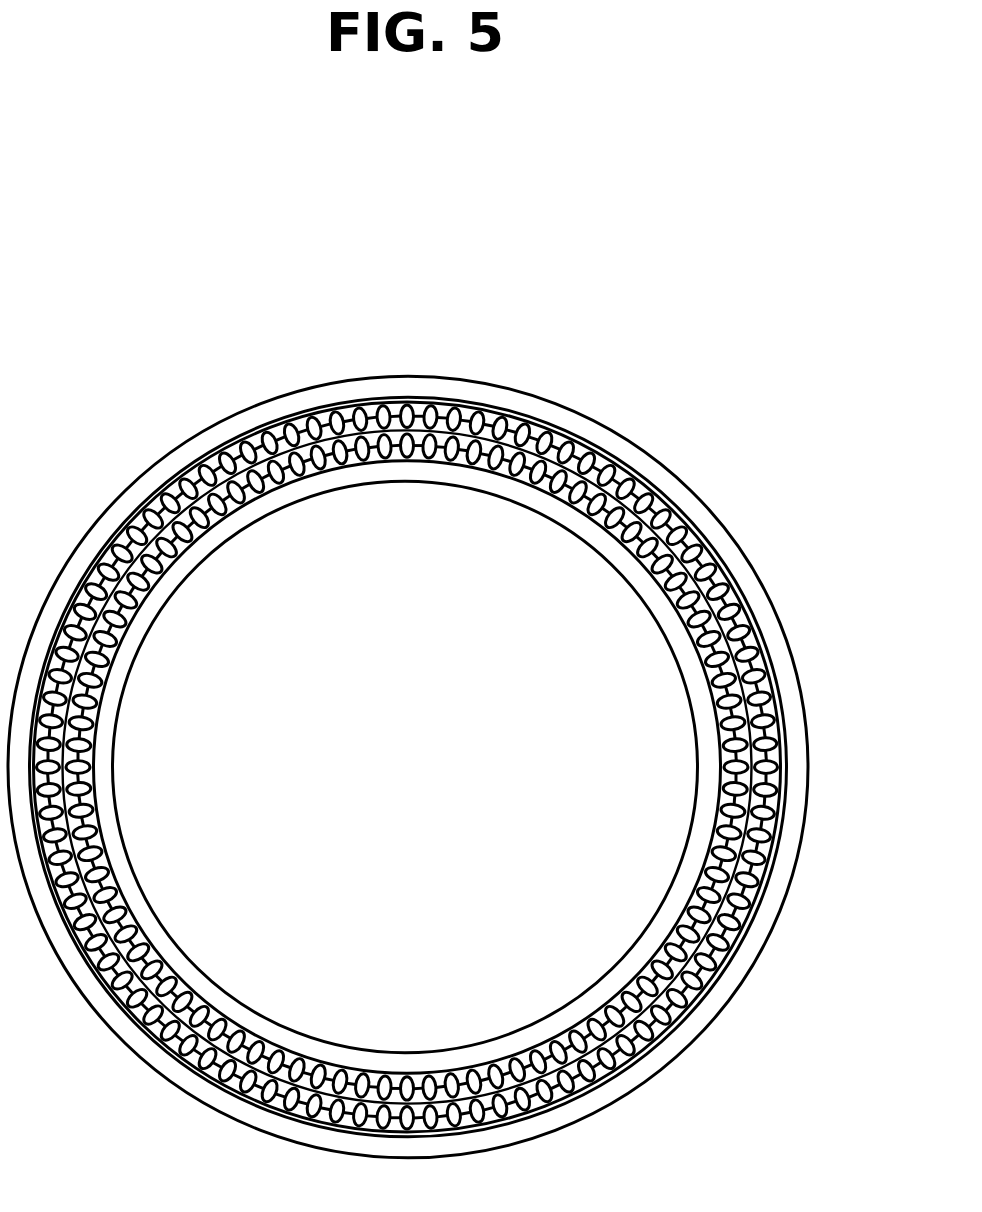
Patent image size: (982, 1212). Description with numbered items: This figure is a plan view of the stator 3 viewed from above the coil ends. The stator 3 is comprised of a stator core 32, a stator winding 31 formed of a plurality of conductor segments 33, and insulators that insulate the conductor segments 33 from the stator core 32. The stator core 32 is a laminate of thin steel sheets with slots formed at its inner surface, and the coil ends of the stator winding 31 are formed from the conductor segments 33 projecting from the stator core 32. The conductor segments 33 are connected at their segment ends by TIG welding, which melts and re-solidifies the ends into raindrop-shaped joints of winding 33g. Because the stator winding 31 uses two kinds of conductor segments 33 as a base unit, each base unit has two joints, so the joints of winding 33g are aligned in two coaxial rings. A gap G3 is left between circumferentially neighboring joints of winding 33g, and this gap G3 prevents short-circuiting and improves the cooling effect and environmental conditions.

The stator 3 is at (474, 373).
The stator winding 31 is at (543, 420).
The stator core 32 is at (633, 457).
The conductor segments 33 is at (715, 548).
The joints of winding 33g is at (670, 498).
The gap G3 is at (760, 627).